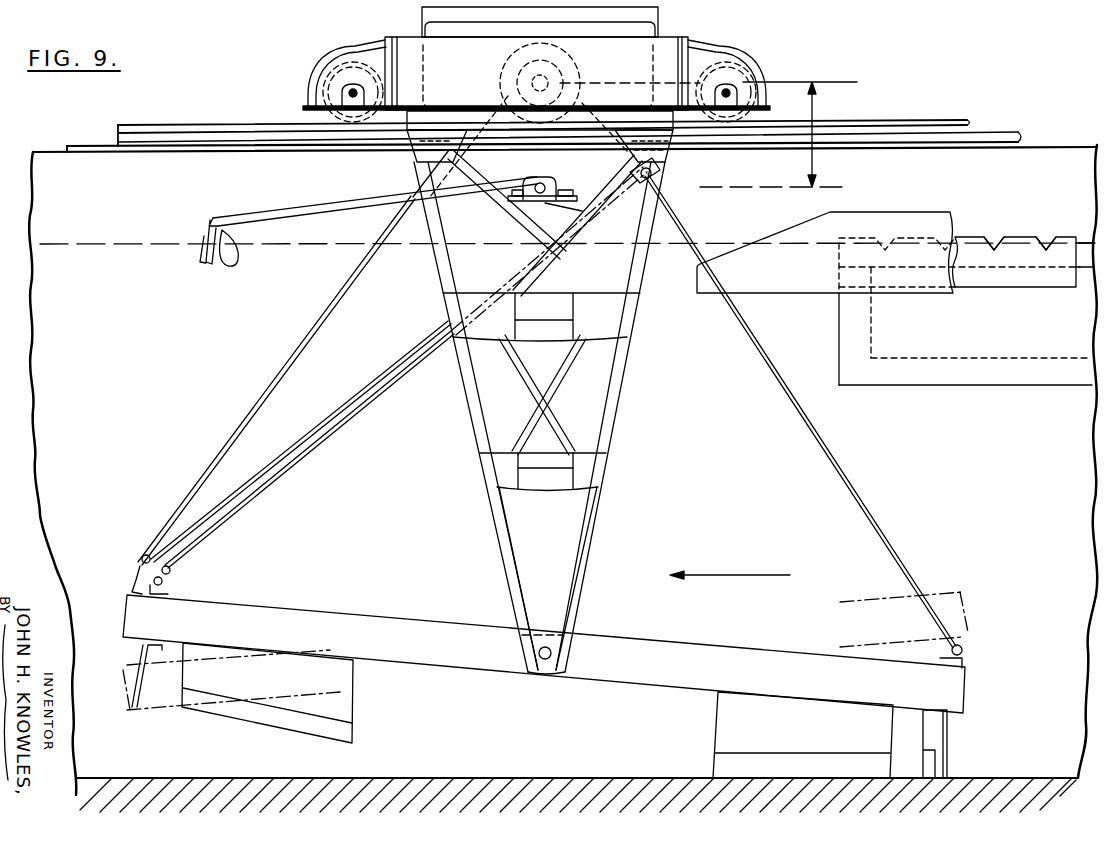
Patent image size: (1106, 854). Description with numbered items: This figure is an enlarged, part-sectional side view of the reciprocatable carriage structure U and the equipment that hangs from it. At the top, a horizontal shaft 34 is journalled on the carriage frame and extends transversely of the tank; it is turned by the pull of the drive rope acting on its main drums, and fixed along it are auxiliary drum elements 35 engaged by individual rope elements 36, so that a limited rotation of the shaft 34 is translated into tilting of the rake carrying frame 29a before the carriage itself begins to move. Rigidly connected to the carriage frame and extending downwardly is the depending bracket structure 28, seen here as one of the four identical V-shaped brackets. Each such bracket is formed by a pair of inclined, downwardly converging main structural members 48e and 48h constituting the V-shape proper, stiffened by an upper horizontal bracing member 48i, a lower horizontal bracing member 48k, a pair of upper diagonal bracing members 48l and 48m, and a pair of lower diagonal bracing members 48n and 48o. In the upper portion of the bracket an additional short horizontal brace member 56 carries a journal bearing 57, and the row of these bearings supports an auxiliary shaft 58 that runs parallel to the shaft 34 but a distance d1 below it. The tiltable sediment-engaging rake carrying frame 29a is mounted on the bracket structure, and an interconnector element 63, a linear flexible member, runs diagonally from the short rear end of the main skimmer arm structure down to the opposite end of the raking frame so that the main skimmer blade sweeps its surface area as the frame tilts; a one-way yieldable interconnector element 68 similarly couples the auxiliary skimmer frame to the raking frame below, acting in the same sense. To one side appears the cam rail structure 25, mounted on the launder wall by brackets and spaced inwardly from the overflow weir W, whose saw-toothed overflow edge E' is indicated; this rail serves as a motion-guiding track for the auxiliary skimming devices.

The reciprocatable carriage structure U is at (676, 32).
The horizontal shaft 34 is at (550, 82).
The auxiliary drum elements 35 is at (516, 54).
The distance d1 is at (778, 134).
The depending bracket structure 28 is at (636, 331).
The upper horizontal bracing member 48i is at (535, 330).
The lower horizontal bracing member 48k is at (542, 474).
The upper diagonal bracing member 48l is at (480, 194).
The upper diagonal bracing member 48m is at (561, 240).
The lower diagonal bracing member 48n is at (526, 372).
The lower diagonal bracing member 48o is at (558, 396).
The main structural member 48e is at (505, 535).
The main structural member 48h is at (577, 568).
The auxiliary shaft 58 is at (541, 181).
The short horizontal brace member 56 is at (537, 207).
The journal bearing 57 is at (586, 207).
The interconnector element 63 is at (316, 430).
The one-way yieldable interconnector element 68 is at (303, 462).
The rope element 36 is at (838, 466).
The tiltable rake carrying frame 29a is at (368, 615).
The cam rail structure 25 is at (934, 212).
The overflow weir W is at (1024, 237).
The overflow edge E' is at (1022, 231).